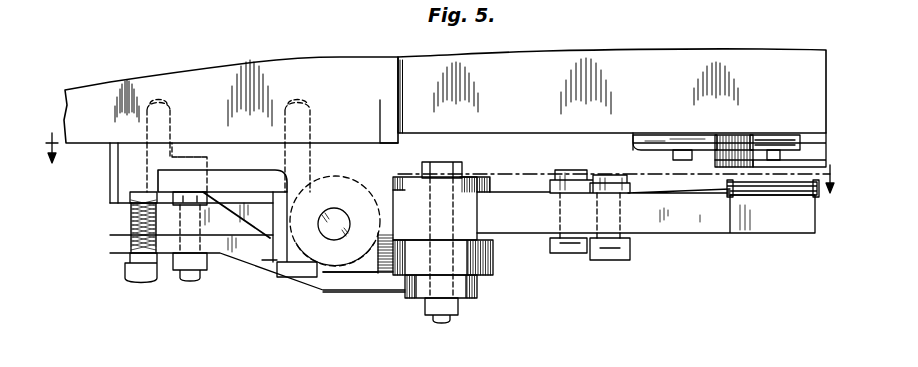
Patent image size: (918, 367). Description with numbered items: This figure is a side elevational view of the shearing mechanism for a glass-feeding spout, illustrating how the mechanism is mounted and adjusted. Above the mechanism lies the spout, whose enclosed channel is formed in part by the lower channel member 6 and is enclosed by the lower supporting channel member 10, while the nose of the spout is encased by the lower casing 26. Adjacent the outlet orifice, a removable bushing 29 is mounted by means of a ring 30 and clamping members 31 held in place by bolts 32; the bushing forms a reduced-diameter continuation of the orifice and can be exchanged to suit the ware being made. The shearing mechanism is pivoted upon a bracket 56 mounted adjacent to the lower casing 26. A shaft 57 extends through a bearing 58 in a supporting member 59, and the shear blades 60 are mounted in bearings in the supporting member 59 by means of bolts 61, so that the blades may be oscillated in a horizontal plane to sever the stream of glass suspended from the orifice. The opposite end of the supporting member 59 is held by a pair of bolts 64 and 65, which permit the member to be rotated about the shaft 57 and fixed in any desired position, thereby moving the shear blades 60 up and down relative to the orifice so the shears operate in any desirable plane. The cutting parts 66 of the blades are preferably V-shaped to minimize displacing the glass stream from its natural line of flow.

The lower channel member 6 is at (440, 177).
The lower supporting channel member 10 is at (263, 65).
The lower casing 26 is at (652, 62).
The bushing 29 is at (722, 158).
The ring 30 is at (735, 147).
The clamping members 31 is at (663, 143).
The bolts 32 is at (678, 156).
The bracket 56 is at (303, 160).
The shaft 57 is at (343, 238).
The bearing 58 is at (348, 177).
The supporting member 59 is at (387, 273).
The shear blades 60 is at (715, 193).
The bolts 61 is at (447, 175).
The bolt 64 is at (197, 280).
The bolt 65 is at (148, 283).
The cutting parts 66 is at (787, 187).